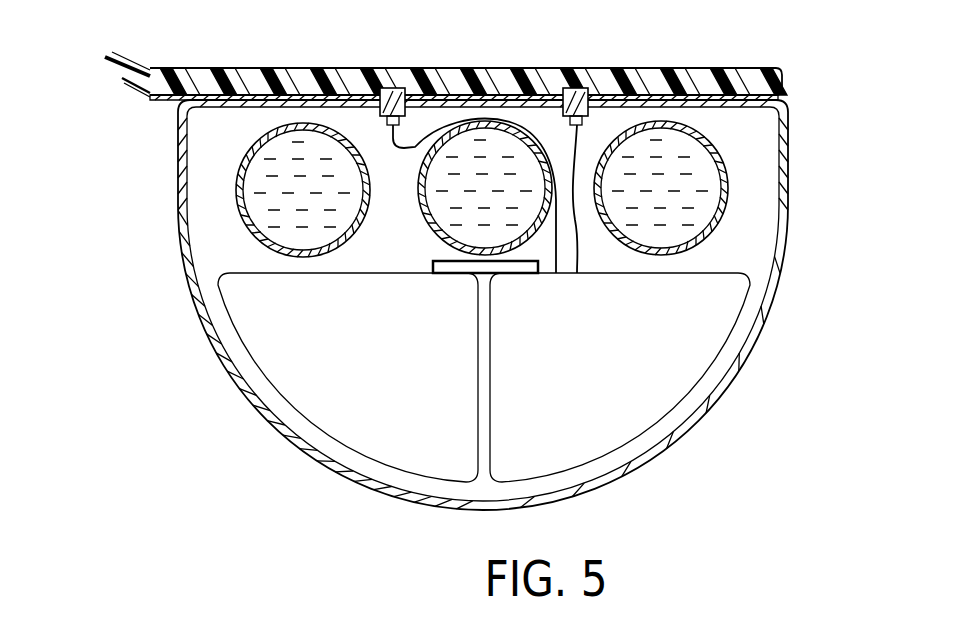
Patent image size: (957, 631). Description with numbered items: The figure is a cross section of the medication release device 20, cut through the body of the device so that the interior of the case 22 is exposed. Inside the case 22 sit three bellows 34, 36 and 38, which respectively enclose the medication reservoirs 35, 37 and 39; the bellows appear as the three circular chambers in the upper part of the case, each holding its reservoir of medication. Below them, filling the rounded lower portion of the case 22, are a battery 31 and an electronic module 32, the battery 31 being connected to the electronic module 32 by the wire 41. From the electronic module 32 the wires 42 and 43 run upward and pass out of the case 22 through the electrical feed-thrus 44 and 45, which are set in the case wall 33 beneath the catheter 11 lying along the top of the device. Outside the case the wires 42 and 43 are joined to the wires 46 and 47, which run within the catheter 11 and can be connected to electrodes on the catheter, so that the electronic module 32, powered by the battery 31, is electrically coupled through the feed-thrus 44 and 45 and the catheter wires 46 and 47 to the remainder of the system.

The catheter 11 is at (205, 72).
The medication release device 20 is at (160, 357).
The case 22 is at (177, 170).
The battery 31 is at (300, 390).
The electronic module 32 is at (640, 383).
The housing wall 33 is at (770, 200).
The bellows 34 is at (262, 146).
The medication reservoir 35 is at (265, 210).
The bellows 36 is at (436, 225).
The medication reservoir 37 is at (437, 177).
The bellows 38 is at (700, 142).
The medication reservoir 39 is at (680, 215).
The wire 41 is at (434, 262).
The wire 42 is at (411, 146).
The wire 43 is at (576, 236).
The electrical feed-thru 44 is at (417, 80).
The electrical feed-thru 45 is at (600, 80).
The wire 46 is at (118, 84).
The wire 47 is at (118, 57).